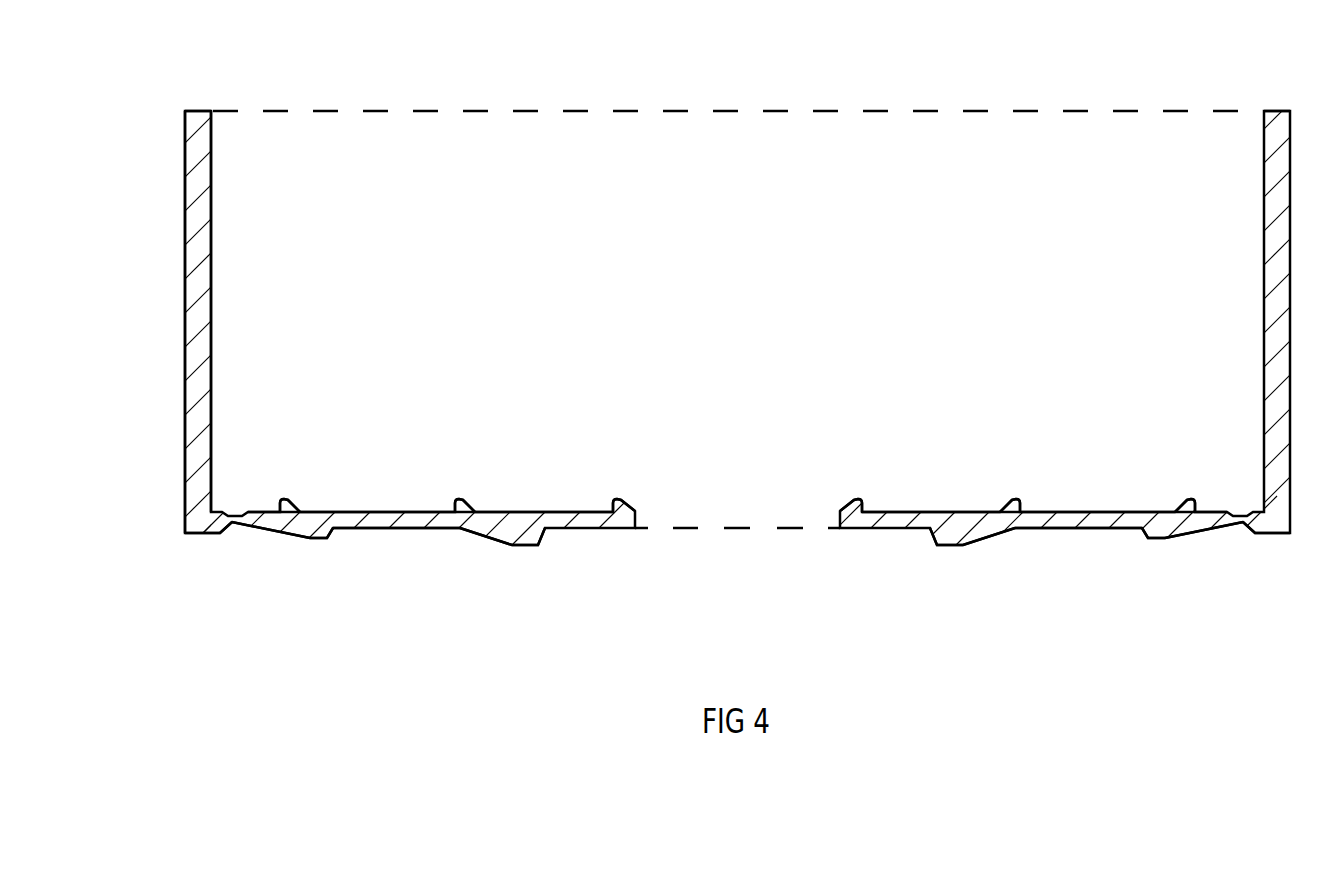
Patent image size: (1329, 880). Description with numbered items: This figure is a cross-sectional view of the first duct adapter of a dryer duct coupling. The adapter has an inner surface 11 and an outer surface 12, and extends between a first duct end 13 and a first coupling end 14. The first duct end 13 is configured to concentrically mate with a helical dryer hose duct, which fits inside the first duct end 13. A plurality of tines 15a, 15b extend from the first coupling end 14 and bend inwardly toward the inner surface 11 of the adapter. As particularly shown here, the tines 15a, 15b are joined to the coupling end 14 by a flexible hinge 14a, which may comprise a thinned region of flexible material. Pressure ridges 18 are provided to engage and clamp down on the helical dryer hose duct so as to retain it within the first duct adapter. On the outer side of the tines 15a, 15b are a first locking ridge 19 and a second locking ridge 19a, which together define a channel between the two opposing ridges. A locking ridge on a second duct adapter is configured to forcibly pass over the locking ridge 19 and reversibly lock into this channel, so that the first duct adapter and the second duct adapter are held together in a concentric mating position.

The inner surface 11 is at (212, 232).
The outer surface 12 is at (185, 240).
The first duct end 13 is at (197, 109).
The first coupling end 14 is at (207, 523).
The flexible hinge 14a is at (232, 523).
The tine 15a is at (1063, 529).
The tine 15b is at (375, 529).
The pressure ridges 18 is at (280, 498).
The first locking ridge 19 is at (310, 539).
The second locking ridge 19a is at (523, 547).